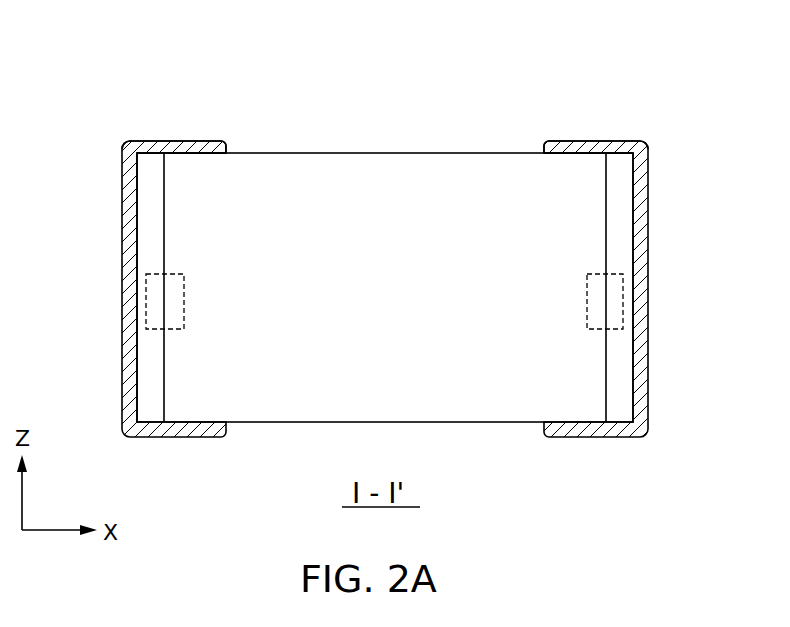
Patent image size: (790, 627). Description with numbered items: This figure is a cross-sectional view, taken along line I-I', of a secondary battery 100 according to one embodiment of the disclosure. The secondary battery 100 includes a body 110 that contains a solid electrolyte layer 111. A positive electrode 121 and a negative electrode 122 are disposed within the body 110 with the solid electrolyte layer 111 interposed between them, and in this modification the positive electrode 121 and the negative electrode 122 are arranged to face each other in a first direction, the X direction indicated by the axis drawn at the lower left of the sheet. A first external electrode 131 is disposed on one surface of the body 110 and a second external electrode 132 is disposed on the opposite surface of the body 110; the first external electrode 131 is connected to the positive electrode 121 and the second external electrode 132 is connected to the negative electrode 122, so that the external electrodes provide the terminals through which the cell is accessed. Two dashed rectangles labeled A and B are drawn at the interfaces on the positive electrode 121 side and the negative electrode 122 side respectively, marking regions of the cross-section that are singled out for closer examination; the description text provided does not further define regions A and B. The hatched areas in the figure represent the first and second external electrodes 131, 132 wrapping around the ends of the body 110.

The secondary battery 100 is at (399, 33).
The body 110 is at (333, 153).
The solid electrolyte layer 111 is at (423, 188).
The positive electrode 121 is at (148, 214).
The negative electrode 122 is at (622, 212).
The first external electrode 131 is at (184, 142).
The second external electrode 132 is at (600, 140).
The region A is at (148, 300).
The region B is at (625, 298).